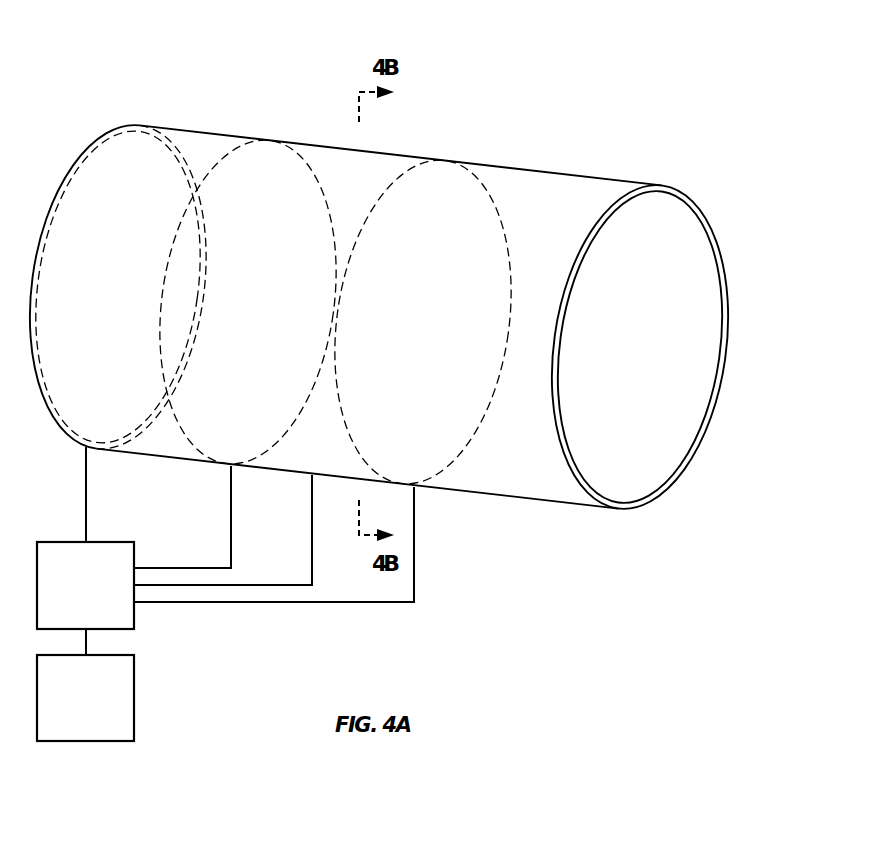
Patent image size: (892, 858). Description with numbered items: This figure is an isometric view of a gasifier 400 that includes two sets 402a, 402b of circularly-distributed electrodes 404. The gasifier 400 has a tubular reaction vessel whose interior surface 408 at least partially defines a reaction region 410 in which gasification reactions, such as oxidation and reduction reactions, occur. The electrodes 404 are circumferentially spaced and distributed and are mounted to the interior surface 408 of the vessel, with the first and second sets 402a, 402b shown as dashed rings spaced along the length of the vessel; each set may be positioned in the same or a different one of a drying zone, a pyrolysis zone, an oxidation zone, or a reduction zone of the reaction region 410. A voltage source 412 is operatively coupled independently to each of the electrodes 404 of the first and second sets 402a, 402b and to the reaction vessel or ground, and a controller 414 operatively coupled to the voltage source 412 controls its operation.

The gasifier 400 is at (618, 54).
The first set of circularly-distributed electrodes 402a is at (236, 142).
The second set of circularly-distributed electrodes 402b is at (485, 178).
The electrodes 404 is at (560, 170).
The interior surface 408 is at (690, 209).
The reaction region 410 is at (700, 366).
The voltage source 412 is at (68, 620).
The controller 414 is at (68, 733).